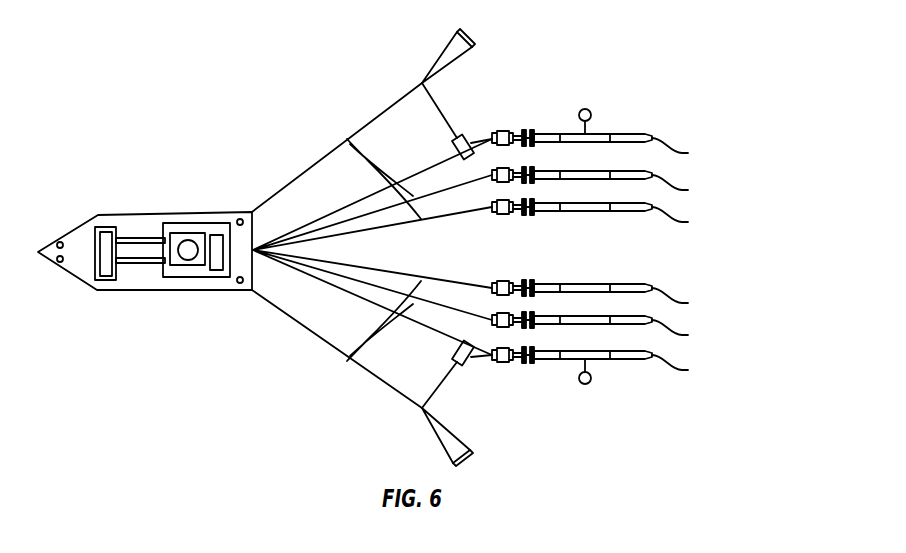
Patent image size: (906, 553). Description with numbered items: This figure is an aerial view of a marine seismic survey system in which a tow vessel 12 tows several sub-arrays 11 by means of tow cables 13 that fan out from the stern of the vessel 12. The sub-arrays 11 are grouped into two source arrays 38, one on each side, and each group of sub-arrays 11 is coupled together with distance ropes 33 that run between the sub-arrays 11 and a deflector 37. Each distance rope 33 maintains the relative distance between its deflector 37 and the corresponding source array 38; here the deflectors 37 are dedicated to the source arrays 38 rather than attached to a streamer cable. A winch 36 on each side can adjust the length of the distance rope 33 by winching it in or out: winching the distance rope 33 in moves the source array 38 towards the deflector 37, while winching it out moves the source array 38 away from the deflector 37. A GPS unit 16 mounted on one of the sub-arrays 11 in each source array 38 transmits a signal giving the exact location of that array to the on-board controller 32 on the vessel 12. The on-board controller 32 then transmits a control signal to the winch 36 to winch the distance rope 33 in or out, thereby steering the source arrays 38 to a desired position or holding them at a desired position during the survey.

The sub-array 11 is at (602, 256).
The tow vessel 12 is at (108, 216).
The tow cable 13 is at (325, 214).
The GPS unit 16 is at (589, 109).
The on-board controller 32 is at (217, 264).
The distance rope 33 is at (347, 141).
The winch 36 is at (469, 134).
The deflector 37 is at (446, 49).
The source array 38 is at (724, 210).